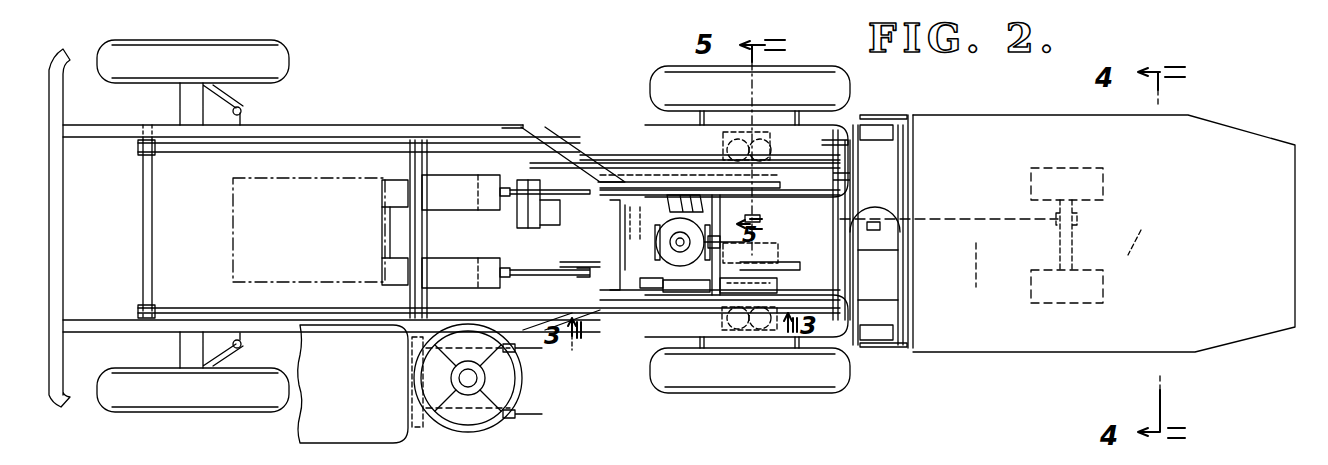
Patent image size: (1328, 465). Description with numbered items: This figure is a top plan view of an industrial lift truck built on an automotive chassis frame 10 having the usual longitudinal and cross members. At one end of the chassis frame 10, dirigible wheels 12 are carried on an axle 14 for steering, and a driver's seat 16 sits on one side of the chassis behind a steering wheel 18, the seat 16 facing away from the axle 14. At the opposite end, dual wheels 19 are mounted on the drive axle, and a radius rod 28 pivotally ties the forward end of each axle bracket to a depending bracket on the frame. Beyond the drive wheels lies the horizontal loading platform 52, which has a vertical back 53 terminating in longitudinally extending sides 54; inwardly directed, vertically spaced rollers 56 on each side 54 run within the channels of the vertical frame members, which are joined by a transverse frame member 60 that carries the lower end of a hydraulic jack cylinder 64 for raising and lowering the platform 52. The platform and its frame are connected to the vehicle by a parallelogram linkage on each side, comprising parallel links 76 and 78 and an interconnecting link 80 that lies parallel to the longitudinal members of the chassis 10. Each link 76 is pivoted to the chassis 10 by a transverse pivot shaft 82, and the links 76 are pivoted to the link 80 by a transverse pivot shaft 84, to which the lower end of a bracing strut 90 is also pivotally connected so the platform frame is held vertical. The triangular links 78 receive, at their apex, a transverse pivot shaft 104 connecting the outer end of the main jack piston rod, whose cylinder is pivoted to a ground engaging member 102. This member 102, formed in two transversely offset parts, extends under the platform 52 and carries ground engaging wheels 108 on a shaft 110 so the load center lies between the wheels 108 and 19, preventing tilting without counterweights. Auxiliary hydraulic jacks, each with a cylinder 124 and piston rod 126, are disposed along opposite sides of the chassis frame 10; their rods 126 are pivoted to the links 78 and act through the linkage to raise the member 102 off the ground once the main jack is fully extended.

The chassis frame 10 is at (479, 120).
The dirigible wheels 12 is at (280, 46).
The axle 14 is at (185, 103).
The driver's seat 16 is at (372, 433).
The steering wheel 18 is at (472, 433).
The dual wheels 19 is at (652, 92).
The radius rod 28 is at (683, 285).
The loading platform 52 is at (1200, 115).
The vertical back 53 is at (913, 193).
The sides 54 is at (880, 114).
The rollers 56 is at (890, 127).
The transverse frame member 60 is at (885, 292).
The cylinder 64 is at (868, 213).
The links 76 is at (240, 152).
The links 78 is at (782, 192).
The interconnecting link 80 is at (517, 160).
The pivot shaft 82 is at (148, 230).
The pivot shaft 84 is at (400, 235).
The strut 90 is at (530, 163).
The ground engaging member 102 is at (949, 260).
The pivot shaft 104 is at (752, 218).
The ground engaging wheels 108 is at (1105, 172).
The shaft 110 is at (1090, 210).
The cylinder 124 is at (447, 267).
The piston rod 126 is at (525, 200).